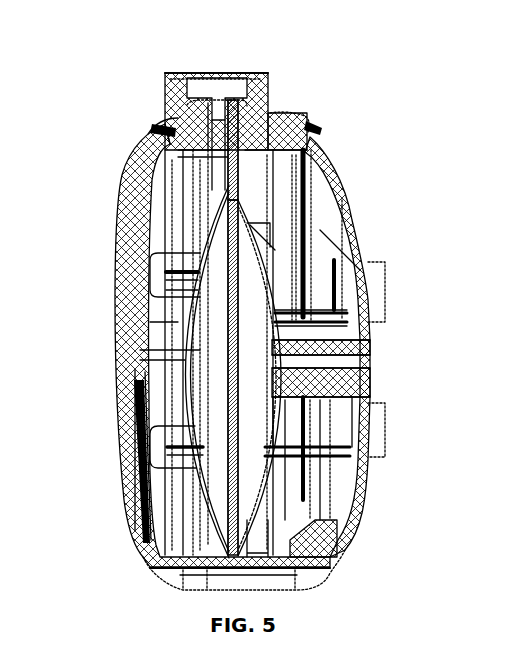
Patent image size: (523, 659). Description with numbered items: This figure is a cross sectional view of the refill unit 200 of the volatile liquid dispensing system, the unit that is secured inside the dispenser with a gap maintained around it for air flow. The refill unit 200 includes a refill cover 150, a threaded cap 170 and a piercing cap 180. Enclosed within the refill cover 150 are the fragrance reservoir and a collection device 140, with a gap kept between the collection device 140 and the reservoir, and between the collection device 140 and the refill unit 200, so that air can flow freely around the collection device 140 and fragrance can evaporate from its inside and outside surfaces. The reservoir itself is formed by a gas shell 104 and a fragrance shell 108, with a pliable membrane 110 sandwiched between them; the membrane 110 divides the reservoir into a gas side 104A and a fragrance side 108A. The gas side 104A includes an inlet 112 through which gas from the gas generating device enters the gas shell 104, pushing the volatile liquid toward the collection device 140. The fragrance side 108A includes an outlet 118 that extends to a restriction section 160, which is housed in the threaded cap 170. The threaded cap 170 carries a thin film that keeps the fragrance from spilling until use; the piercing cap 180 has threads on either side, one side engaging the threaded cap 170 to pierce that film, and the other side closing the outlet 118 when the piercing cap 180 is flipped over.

The refill unit 200 is at (242, 357).
The piercing cap 180 is at (192, 90).
The threaded cap 170 is at (196, 128).
The restriction section 160 is at (215, 148).
The outlet 118 is at (214, 196).
The collection device 140 is at (172, 321).
The fragrance shell 108 is at (163, 353).
The pliable membrane 110 is at (228, 380).
The fragrance side 108A is at (205, 406).
The refill cover 150 is at (120, 473).
The gas side 104A is at (263, 262).
The gas shell 104 is at (264, 283).
The inlet 112 is at (347, 372).